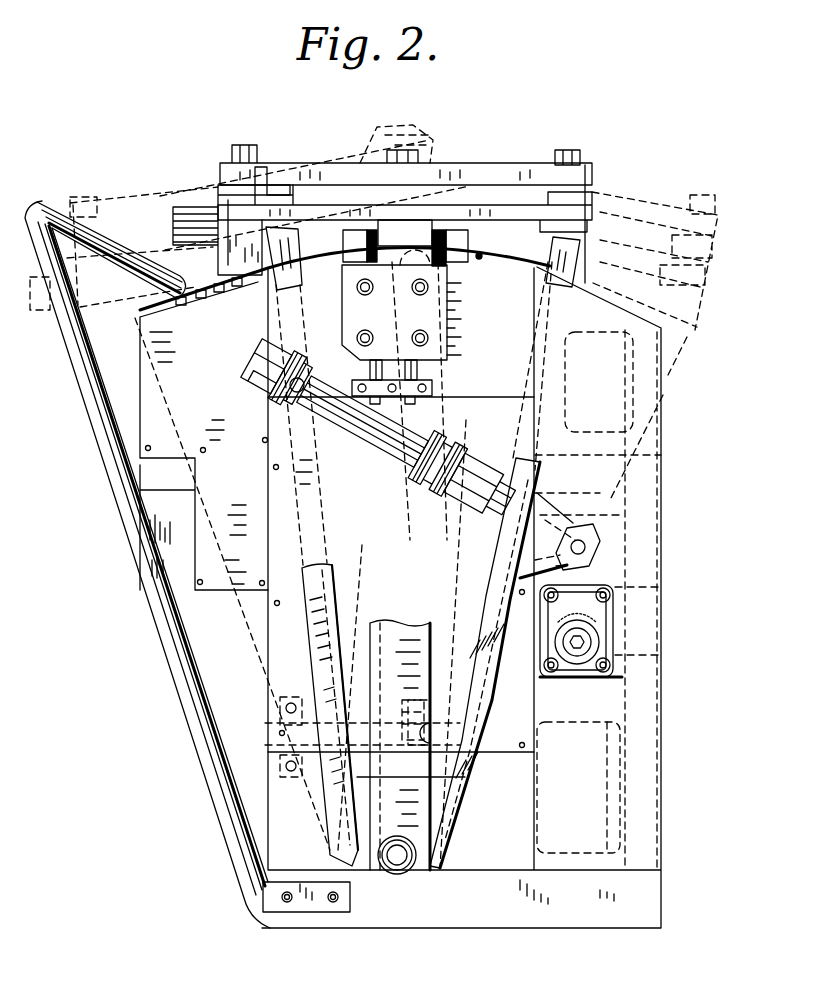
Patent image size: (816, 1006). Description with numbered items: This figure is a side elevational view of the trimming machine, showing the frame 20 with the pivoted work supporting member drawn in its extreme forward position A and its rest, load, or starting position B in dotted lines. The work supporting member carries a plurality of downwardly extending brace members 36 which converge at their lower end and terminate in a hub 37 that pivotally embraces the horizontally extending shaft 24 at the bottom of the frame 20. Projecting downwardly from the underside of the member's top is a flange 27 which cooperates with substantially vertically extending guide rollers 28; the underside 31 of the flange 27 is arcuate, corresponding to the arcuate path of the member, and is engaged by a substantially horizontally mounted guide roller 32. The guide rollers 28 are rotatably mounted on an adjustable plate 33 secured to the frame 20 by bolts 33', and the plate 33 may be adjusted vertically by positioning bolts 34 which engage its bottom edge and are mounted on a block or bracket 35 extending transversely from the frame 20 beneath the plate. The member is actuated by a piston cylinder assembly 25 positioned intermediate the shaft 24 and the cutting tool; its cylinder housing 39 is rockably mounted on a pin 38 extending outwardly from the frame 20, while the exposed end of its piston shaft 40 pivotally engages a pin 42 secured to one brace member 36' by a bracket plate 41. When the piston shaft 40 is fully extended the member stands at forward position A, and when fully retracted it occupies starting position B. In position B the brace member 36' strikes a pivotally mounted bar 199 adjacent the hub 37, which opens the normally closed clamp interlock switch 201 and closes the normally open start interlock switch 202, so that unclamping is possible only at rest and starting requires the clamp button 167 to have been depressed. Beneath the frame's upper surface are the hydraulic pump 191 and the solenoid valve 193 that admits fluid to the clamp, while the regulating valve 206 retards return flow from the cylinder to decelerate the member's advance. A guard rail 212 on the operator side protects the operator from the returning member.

The frame 20 is at (286, 622).
The shaft 24 is at (397, 860).
The piston cylinder assembly 25 is at (363, 433).
The flange 27 is at (447, 248).
The guide rollers 28 is at (368, 232).
The underside of flange 31 is at (479, 255).
The guide roller 32 is at (352, 279).
The adjustable plate 33 is at (419, 312).
The bolts 33' is at (428, 311).
The positioning bolts 34 is at (413, 372).
The block or bracket 35 is at (436, 391).
The brace members 36 is at (350, 715).
The brace member 36' is at (485, 663).
The hub 37 is at (428, 872).
The pin 38 is at (262, 390).
The cylinder housing 39 is at (324, 384).
The piston shaft 40 is at (628, 511).
The bracket plate 41 is at (546, 500).
The pin 42 is at (584, 548).
The control button 167 is at (141, 312).
The hydraulic pump 191 is at (618, 821).
The solenoid valve 193 is at (600, 397).
The bar 199 is at (430, 741).
The clamp interlock switch 201 is at (280, 726).
The start interlock switch 202 is at (280, 747).
The regulating valve 206 is at (553, 647).
The guard rail 212 is at (193, 715).
The extreme forward position A is at (671, 207).
The rest, load, or starting position B is at (120, 205).